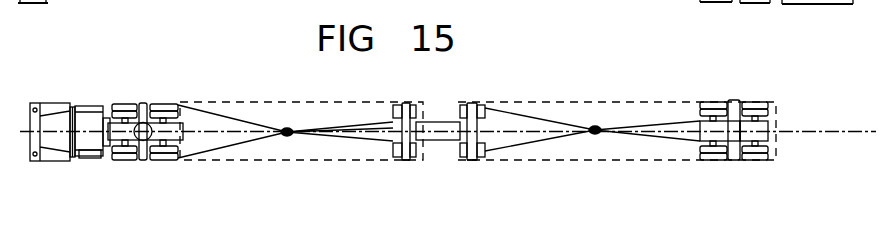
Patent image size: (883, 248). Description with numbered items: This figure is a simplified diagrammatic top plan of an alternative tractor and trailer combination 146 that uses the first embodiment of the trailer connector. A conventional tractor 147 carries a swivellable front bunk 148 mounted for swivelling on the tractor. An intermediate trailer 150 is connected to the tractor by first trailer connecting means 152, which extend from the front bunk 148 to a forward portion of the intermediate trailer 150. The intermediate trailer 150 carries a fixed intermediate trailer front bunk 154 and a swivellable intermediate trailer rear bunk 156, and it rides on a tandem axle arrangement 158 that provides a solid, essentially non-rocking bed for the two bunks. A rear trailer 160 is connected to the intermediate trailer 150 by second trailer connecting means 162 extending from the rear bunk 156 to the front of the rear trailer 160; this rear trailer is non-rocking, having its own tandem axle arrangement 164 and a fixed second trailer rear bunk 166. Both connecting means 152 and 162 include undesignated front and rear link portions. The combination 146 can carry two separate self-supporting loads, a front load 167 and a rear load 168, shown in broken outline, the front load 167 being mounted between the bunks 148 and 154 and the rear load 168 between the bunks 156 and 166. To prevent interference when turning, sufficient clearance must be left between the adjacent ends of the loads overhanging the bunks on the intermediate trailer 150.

The tractor and trailer combination 146 is at (297, 97).
The tractor 147 is at (92, 118).
The front bunk 148 is at (118, 152).
The intermediate trailer 150 is at (438, 118).
The first trailer connecting means 152 is at (243, 122).
The intermediate trailer front bunk 154 is at (385, 143).
The intermediate trailer rear bunk 156 is at (471, 122).
The tandem axle arrangement 158 is at (452, 160).
The rear trailer 160 is at (735, 99).
The second trailer connecting means 162 is at (536, 105).
The tandem axle arrangement 164 is at (713, 158).
The second trailer rear bunk 166 is at (773, 138).
The front load 167 is at (195, 165).
The rear load 168 is at (505, 162).